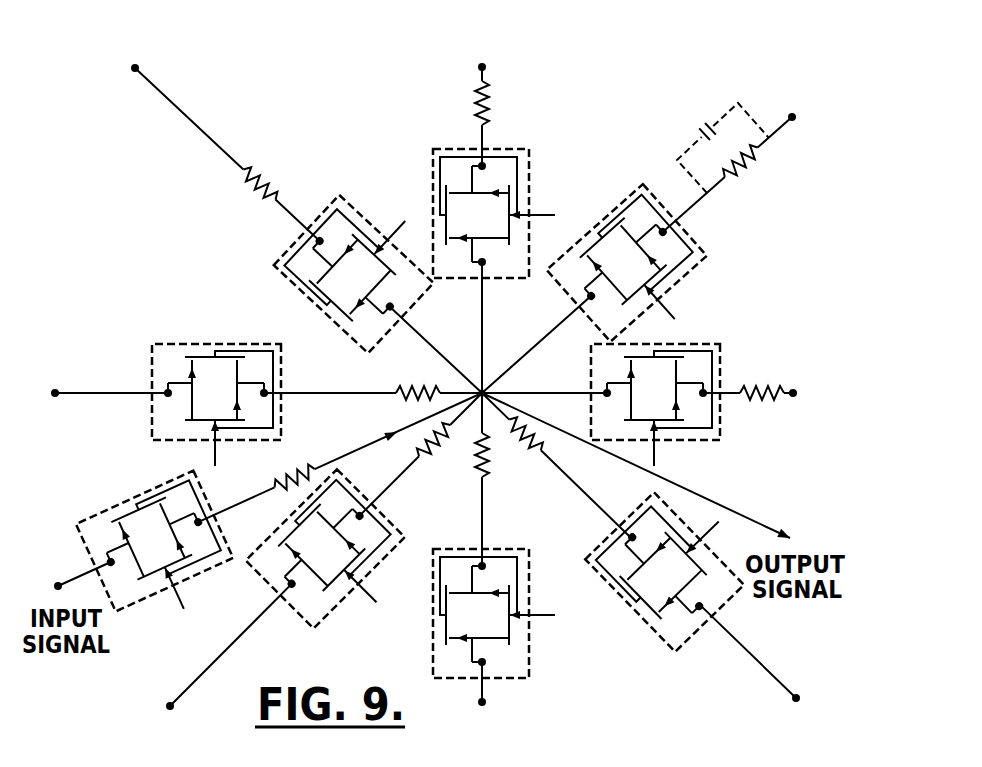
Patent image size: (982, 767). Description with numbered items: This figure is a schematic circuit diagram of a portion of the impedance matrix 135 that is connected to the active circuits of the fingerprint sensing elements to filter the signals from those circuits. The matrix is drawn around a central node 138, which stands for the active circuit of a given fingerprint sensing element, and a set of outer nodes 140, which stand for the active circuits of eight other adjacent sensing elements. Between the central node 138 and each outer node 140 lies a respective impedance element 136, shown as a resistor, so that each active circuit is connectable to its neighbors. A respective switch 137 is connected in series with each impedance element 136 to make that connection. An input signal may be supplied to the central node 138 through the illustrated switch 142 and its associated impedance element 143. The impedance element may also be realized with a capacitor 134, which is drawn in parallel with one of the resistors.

The capacitor 134 is at (687, 147).
The impedance matrix 135 is at (666, 74).
The impedance element 136 is at (545, 455).
The switch 137 is at (628, 602).
The central node 138 is at (482, 393).
The outer node 140 is at (796, 698).
The switch 142 is at (152, 490).
The impedance element 143 is at (277, 483).